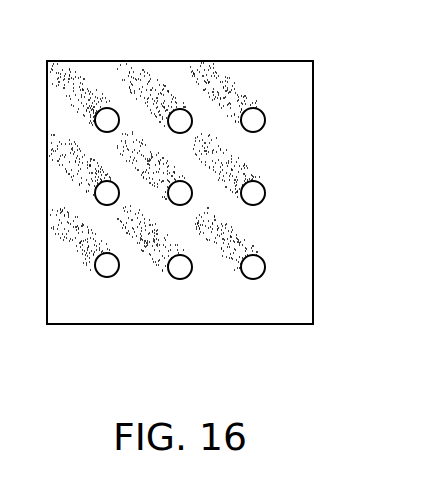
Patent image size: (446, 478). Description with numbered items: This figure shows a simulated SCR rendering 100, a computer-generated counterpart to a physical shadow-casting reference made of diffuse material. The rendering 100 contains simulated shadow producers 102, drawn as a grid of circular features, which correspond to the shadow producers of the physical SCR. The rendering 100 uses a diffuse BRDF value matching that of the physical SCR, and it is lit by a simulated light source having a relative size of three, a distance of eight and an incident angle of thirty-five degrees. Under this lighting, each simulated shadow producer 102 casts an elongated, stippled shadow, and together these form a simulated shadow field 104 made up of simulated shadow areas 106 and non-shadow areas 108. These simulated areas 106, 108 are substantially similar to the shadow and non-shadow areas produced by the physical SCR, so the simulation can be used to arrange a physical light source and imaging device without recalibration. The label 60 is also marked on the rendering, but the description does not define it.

The substrate 60 is at (290, 98).
The simulated SCR rendering 100 is at (260, 305).
The simulated shadow producers 102 is at (143, 290).
The simulated shadow field 104 is at (185, 55).
The simulated shadow areas 106 is at (245, 170).
The non-shadow areas 108 is at (243, 148).